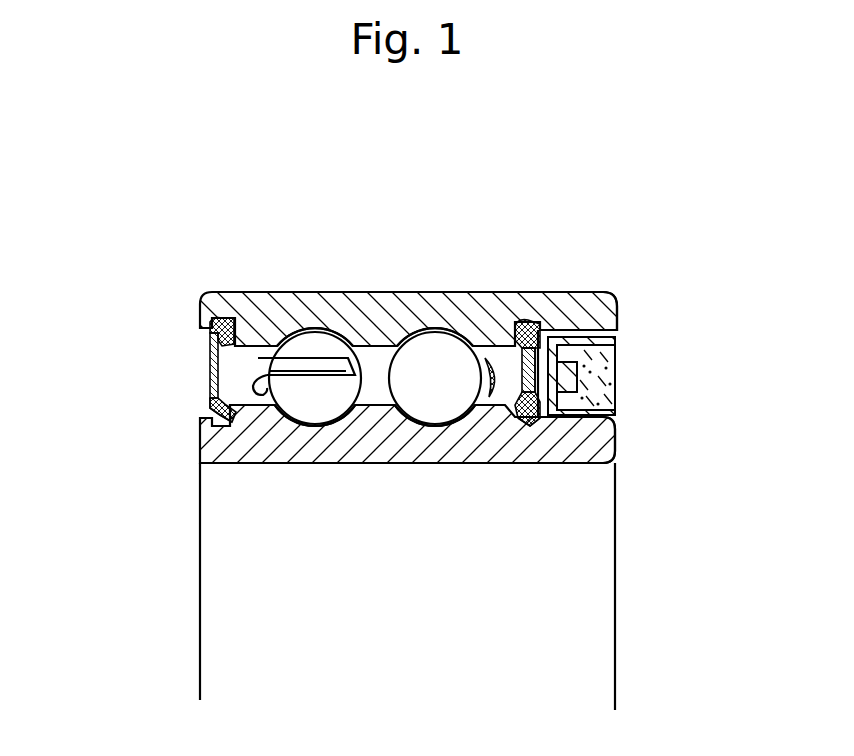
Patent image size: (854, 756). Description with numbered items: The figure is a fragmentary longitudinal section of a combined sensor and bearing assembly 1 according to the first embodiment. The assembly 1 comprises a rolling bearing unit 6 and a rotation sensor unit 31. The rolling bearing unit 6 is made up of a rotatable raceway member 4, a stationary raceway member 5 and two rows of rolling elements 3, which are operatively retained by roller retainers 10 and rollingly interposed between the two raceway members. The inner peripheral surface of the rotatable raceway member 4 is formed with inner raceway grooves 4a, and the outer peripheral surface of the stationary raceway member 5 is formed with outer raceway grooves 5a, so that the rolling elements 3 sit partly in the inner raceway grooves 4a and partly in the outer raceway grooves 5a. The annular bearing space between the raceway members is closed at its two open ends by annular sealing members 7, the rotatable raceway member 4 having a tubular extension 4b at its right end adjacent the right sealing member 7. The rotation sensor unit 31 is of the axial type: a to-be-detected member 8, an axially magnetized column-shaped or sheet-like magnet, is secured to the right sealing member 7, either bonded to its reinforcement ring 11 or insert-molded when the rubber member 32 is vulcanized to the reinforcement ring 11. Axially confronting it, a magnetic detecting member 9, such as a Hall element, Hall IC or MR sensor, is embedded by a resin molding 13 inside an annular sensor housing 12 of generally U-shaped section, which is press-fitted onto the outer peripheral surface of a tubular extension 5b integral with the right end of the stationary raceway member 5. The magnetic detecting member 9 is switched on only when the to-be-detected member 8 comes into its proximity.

The combined sensor and bearing assembly 1 is at (163, 218).
The rolling elements 3 is at (335, 342).
The rotatable raceway member 4 is at (251, 306).
The inner raceway grooves 4a is at (289, 296).
The tubular extension 4b is at (606, 293).
The stationary raceway member 5 is at (200, 455).
The outer raceway grooves 5a is at (302, 428).
The tubular extension 5b is at (580, 442).
The rolling bearing unit 6 is at (218, 194).
The annular sealing members 7 is at (210, 370).
The to-be-detected member 8 is at (550, 338).
The magnetic detecting member 9 is at (574, 362).
The roller retainers 10 is at (210, 398).
The reinforcement ring 11 is at (533, 348).
The sensor housing 12 is at (614, 338).
The resin molding 13 is at (605, 382).
The rotation sensor unit 31 is at (622, 276).
The rubber member 32 is at (530, 422).